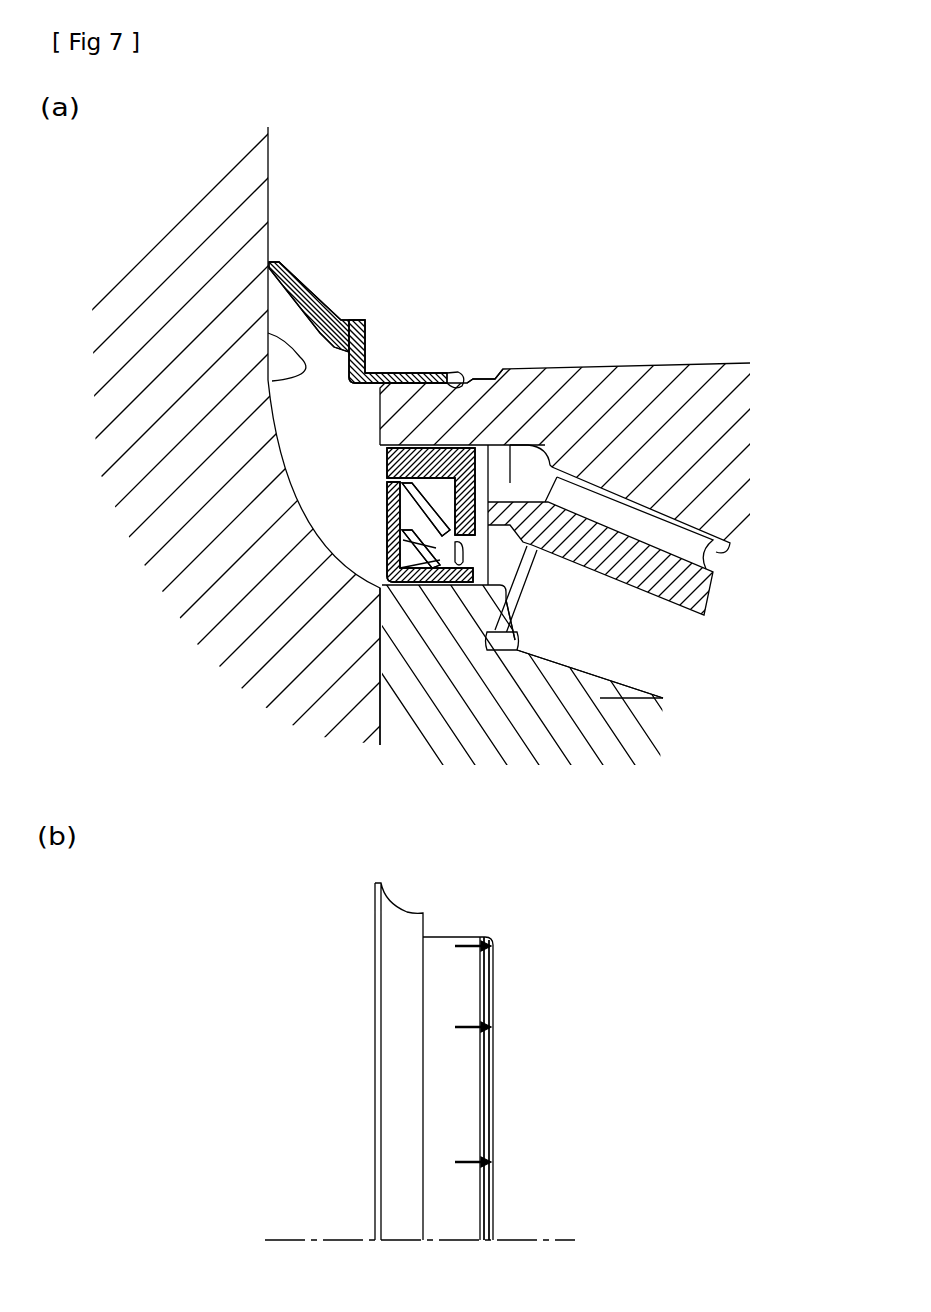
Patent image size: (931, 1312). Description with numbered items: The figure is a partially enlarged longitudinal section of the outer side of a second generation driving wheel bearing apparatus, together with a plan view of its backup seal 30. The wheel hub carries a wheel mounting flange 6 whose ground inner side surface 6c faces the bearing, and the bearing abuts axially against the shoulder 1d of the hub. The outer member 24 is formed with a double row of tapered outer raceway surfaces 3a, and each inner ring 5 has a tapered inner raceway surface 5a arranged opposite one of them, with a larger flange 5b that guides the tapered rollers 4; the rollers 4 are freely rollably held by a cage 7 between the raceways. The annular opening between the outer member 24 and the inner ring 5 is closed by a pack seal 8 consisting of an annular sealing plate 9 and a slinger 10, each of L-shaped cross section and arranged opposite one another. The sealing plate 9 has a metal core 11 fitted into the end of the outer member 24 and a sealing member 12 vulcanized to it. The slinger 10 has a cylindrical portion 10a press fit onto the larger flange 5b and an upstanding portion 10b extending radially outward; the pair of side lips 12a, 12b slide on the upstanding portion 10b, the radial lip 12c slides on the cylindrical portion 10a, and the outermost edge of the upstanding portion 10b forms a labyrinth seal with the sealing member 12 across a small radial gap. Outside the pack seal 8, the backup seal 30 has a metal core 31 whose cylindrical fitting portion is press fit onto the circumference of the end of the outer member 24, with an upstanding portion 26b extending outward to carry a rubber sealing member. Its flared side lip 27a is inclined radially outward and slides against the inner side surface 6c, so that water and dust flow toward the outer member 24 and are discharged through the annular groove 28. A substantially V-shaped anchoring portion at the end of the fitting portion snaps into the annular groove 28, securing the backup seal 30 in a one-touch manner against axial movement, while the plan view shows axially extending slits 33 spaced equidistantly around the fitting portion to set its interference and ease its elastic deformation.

The shoulder 1d is at (383, 688).
The outer raceway surface 3a is at (703, 545).
The tapered roller 4 is at (668, 690).
The inner ring 5 is at (580, 733).
The inner raceway surface 5a is at (610, 672).
The larger flange 5b is at (540, 657).
The wheel mounting flange 6 is at (195, 195).
The inner side surface 6c is at (272, 381).
The cage 7 is at (706, 612).
The seal 8 is at (87, 492).
The sealing plate 9 is at (157, 450).
The slinger 10 is at (157, 588).
The cylindrical portion 10a is at (389, 580).
The upstanding portion 10b is at (395, 565).
The metal core 11 is at (386, 450).
The sealing member 12 is at (227, 485).
The side lip 12a is at (405, 490).
The side lip 12b is at (410, 540).
The radial lip 12c is at (415, 550).
The outer member 24 is at (722, 448).
The upstanding portion 26b is at (370, 345).
The side lip 27a is at (330, 305).
The annular groove 28 is at (460, 372).
The backup seal 30 is at (545, 152).
The metal core 31 is at (480, 207).
The slit 33 is at (494, 1163).